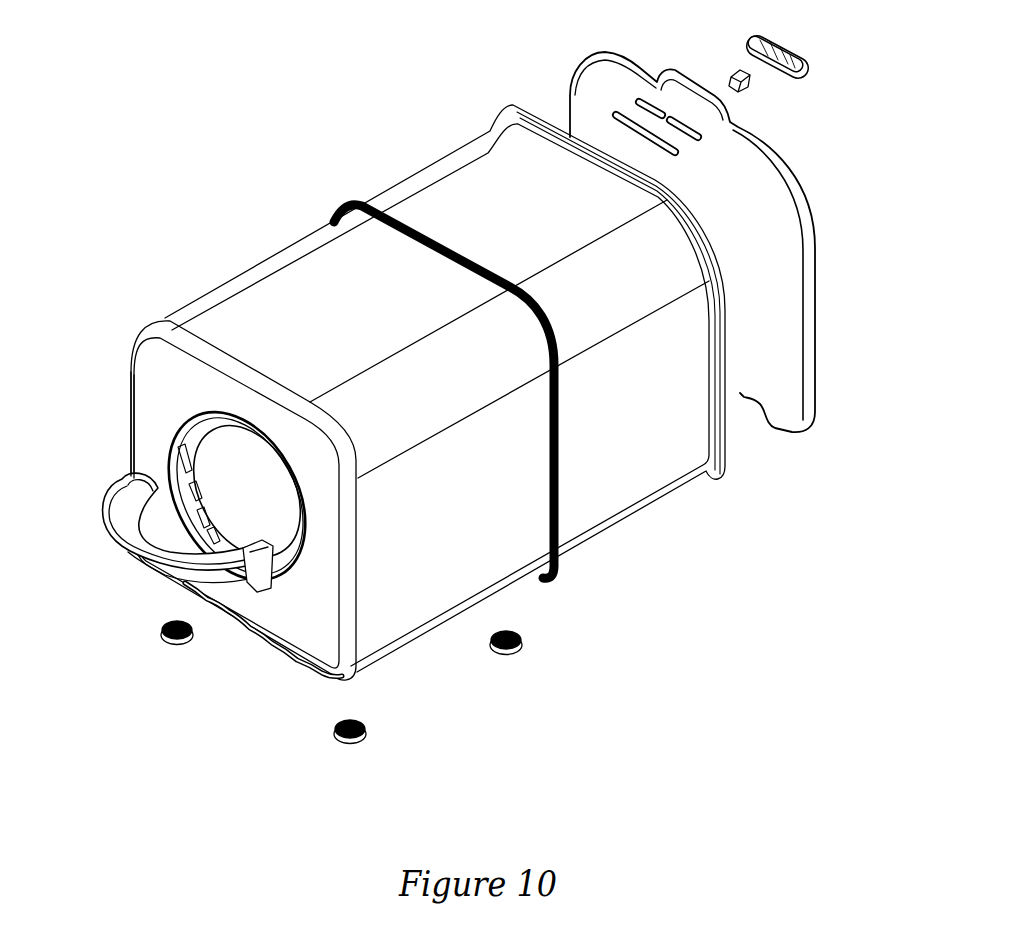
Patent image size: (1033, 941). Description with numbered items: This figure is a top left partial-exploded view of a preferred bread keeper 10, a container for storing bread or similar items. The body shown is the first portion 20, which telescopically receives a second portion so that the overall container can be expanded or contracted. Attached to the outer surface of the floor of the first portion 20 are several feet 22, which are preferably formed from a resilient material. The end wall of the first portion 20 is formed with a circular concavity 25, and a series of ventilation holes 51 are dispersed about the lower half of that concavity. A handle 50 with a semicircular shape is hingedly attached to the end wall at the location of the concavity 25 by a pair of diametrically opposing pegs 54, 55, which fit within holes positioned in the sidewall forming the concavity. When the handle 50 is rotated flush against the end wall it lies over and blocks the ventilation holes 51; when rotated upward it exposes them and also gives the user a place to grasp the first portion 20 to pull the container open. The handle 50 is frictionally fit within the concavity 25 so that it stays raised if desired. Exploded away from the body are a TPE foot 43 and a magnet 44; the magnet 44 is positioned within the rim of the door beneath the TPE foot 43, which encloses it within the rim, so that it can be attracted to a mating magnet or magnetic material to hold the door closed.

The bread keeper 10 is at (467, 411).
The first portion 20 is at (245, 290).
The feet 22 is at (172, 643).
The circular concavity 25 is at (177, 423).
The TPE foot 43 is at (812, 58).
The magnet 44 is at (750, 82).
The handle 50 is at (153, 548).
The ventilation holes 51 is at (272, 590).
The peg 54 is at (256, 585).
The peg 55 is at (122, 477).